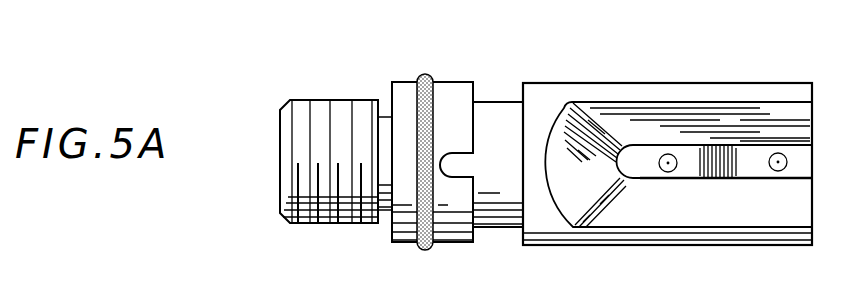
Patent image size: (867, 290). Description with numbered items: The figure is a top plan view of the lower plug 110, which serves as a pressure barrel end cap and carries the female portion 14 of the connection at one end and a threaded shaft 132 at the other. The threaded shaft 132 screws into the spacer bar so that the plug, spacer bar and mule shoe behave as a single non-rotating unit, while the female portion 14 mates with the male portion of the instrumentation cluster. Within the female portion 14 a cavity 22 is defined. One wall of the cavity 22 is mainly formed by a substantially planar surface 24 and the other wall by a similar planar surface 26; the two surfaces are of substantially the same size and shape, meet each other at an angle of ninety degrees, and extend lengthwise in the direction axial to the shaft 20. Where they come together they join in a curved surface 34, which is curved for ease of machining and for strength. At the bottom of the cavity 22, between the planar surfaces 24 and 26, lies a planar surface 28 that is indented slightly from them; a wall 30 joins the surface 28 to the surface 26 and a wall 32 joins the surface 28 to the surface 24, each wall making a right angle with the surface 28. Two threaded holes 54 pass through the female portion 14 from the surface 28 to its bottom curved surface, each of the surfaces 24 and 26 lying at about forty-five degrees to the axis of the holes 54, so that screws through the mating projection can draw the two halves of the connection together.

The female portion 14 is at (678, 142).
The shaft 20 is at (503, 100).
The cavity 22 is at (818, 110).
The planar surface 24 is at (693, 116).
The planar surface 26 is at (695, 218).
The planar surface 28 is at (804, 172).
The wall 30 is at (772, 180).
The wall 32 is at (740, 148).
The curved surface 34 is at (585, 158).
The threaded holes 54 is at (662, 170).
The lower plug 110 is at (458, 69).
The threaded shaft 132 is at (335, 227).